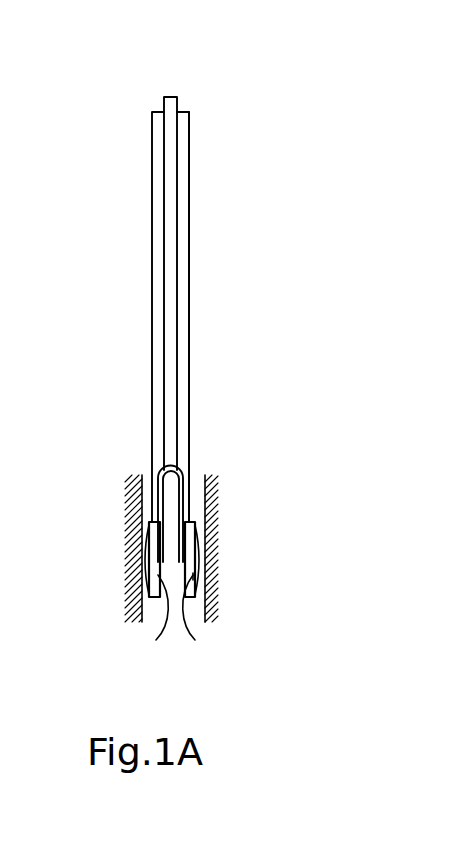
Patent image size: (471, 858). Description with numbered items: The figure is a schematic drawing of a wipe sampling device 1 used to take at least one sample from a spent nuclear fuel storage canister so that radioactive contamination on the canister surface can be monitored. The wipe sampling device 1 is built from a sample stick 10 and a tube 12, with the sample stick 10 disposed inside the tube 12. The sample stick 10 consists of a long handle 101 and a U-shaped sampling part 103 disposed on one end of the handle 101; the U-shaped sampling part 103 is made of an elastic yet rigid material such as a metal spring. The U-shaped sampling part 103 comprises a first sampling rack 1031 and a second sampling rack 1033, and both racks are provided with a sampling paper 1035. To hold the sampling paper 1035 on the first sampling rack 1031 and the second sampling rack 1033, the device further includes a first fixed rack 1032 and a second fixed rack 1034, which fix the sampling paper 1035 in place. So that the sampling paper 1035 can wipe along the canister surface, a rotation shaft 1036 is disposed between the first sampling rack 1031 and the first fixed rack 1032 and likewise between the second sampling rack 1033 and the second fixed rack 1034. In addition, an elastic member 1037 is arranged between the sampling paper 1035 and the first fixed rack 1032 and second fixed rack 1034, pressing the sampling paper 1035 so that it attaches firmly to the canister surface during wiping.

The wipe sampling device 1 is at (285, 27).
The sample stick 10 is at (155, 242).
The tube 12 is at (188, 155).
The handle 101 is at (177, 317).
The U-shaped sampling part 103 is at (189, 470).
The first sampling rack 1031 is at (153, 512).
The first fixed rack 1032 is at (156, 640).
The second sampling rack 1033 is at (185, 513).
The second fixed rack 1034 is at (195, 640).
The sampling paper 1035 is at (204, 578).
The rotation shaft 1036 is at (158, 560).
The elastic member 1037 is at (193, 575).